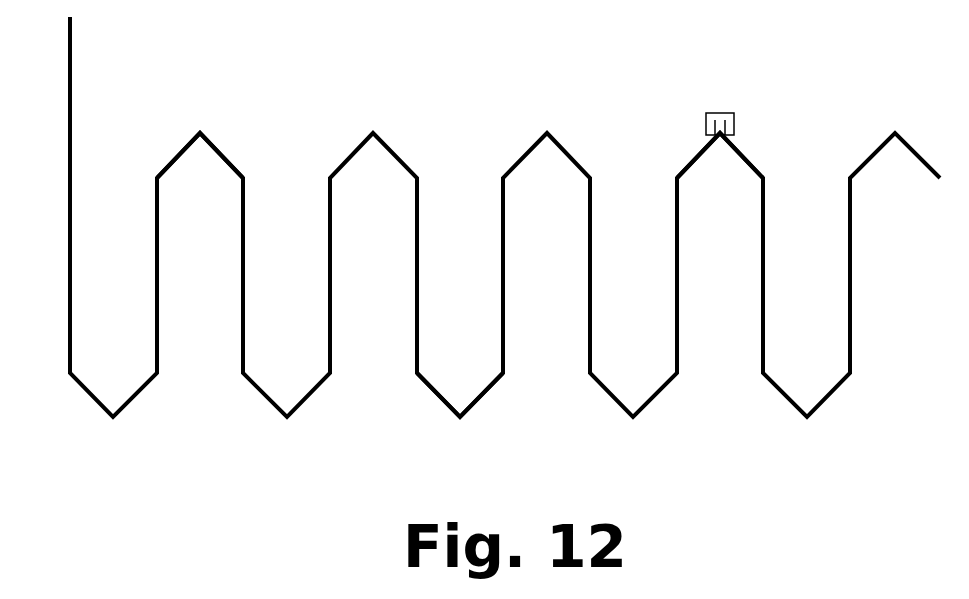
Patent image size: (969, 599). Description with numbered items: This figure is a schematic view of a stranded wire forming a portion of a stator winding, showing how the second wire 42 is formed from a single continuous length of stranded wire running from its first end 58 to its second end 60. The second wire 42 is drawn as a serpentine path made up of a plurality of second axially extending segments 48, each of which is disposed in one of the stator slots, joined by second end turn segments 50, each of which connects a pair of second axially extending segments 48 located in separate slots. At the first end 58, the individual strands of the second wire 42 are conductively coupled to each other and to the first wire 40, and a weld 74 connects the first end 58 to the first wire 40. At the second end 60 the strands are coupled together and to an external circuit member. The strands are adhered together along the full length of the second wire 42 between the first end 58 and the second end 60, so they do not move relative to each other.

The first wire 40 is at (852, 280).
The second wire 42 is at (428, 388).
The second axially extending segments 48 is at (240, 339).
The second end turn segments 50 is at (230, 158).
The first end 58 is at (694, 157).
The second end 60 is at (62, 98).
The weld 74 is at (725, 113).